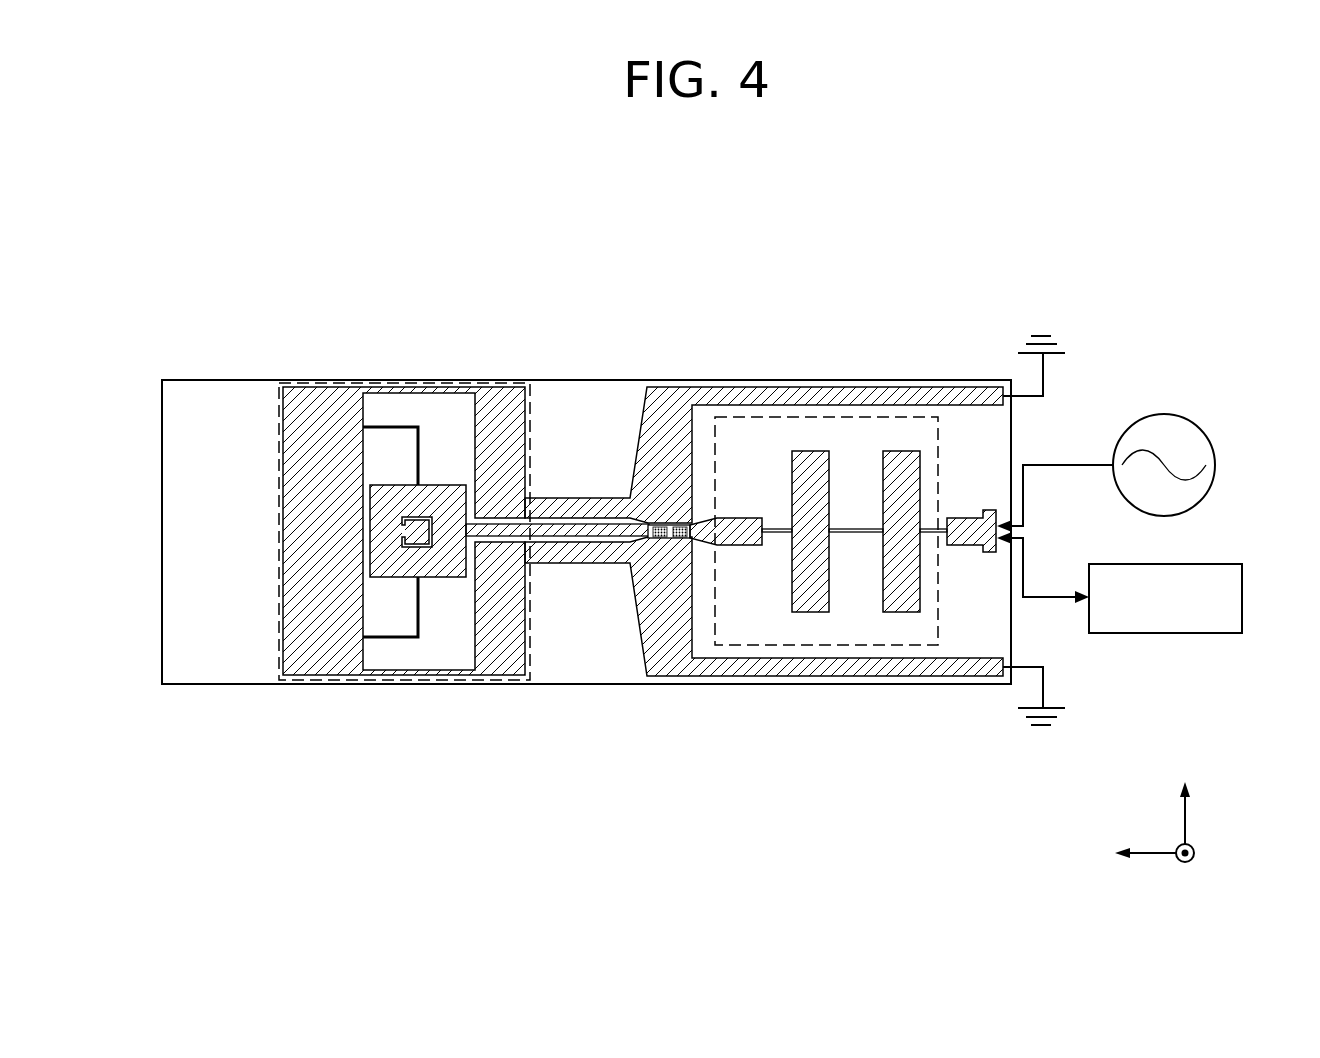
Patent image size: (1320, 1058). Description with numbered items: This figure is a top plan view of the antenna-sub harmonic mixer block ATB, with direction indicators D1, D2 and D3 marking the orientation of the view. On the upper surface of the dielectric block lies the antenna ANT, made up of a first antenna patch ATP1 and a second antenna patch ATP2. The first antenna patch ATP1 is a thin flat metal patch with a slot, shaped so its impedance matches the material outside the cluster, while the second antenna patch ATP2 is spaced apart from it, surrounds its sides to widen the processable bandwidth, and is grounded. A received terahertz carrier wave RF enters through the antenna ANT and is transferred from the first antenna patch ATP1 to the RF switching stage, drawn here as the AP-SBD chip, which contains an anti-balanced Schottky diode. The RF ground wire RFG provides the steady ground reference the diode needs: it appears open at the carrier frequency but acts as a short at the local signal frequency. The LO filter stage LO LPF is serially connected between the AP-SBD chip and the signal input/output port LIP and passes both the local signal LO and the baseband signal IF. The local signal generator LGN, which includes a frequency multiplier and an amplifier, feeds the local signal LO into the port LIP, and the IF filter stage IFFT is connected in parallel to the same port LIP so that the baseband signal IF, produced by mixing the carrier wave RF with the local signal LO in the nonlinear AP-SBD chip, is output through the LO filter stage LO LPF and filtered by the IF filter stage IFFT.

The antenna-sub harmonic mixer block ATB is at (1191, 270).
The antenna ANT is at (464, 557).
The first antenna patch ATP1 is at (455, 570).
The second antenna patch ATP2 is at (318, 663).
The RF ground wire RFG is at (384, 425).
The received signal (carrier wave) RF is at (447, 459).
The RF switching stage AP-SBD chip is at (670, 538).
The LO filter stage LO LPF is at (815, 417).
The signal input/output port LIP is at (965, 528).
The local signal LO is at (1055, 498).
The baseband signal IF is at (1043, 582).
The local signal generator LGN is at (1165, 412).
The IF filter stage IFFT is at (1200, 633).
The first direction D1 is at (1185, 798).
The second direction D2 is at (1130, 853).
The third direction D3 is at (1185, 868).